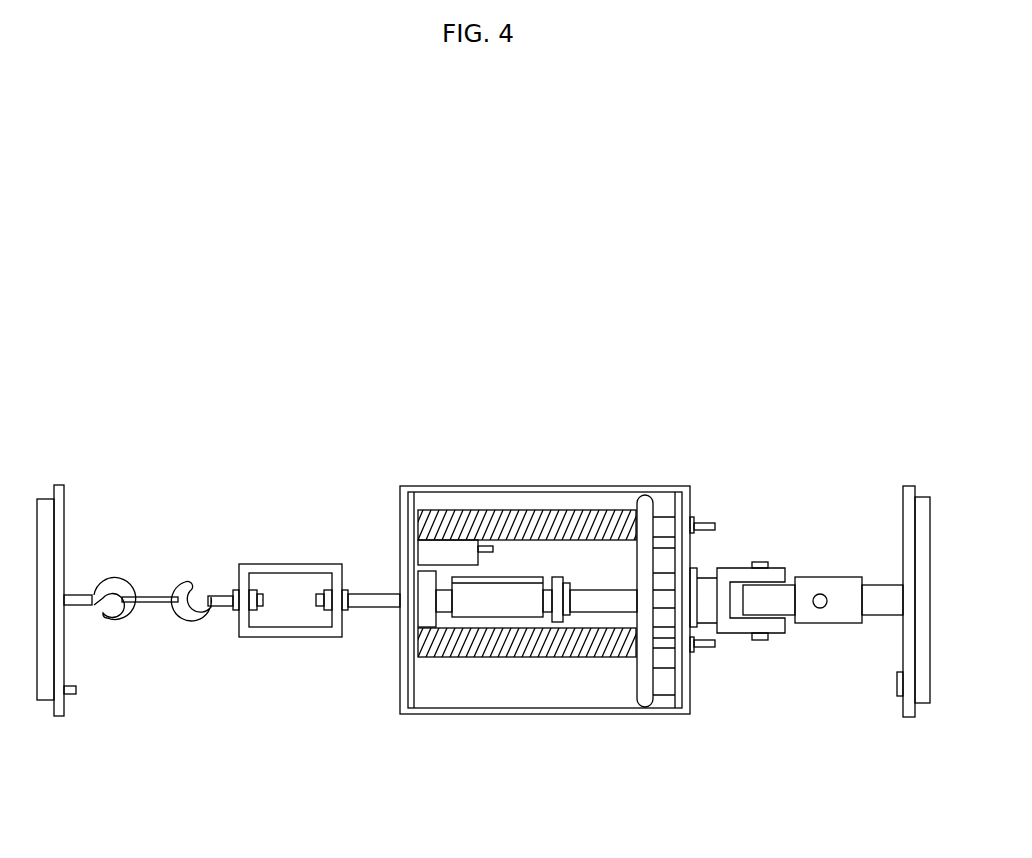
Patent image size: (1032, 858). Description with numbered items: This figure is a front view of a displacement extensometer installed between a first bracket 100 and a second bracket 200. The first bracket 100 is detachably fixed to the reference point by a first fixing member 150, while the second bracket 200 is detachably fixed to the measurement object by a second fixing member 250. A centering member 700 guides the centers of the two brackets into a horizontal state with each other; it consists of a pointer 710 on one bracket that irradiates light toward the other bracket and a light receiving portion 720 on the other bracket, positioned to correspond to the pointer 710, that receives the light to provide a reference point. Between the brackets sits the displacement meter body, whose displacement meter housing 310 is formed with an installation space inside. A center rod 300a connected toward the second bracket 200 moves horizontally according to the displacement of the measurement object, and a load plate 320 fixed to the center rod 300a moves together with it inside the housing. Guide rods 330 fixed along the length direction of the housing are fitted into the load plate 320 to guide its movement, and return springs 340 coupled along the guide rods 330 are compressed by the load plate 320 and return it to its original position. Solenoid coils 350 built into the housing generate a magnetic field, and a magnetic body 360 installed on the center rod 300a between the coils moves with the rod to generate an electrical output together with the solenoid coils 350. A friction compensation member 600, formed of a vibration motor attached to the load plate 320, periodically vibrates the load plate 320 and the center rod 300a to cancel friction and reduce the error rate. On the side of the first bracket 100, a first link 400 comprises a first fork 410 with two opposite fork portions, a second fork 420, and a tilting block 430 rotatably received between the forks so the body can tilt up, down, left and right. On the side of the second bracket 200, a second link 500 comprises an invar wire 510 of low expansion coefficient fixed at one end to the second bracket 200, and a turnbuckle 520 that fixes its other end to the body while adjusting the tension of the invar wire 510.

The first bracket 100 is at (907, 523).
The first fixing member 150 is at (933, 498).
The second bracket 200 is at (63, 492).
The second fixing member 250 is at (38, 693).
The center rod 300a is at (375, 598).
The displacement meter housing 310 is at (533, 486).
The load plate 320 is at (640, 682).
The guide rods 330 is at (665, 520).
The return springs 340 is at (552, 648).
The solenoid coils 350 is at (458, 553).
The magnetic body 360 is at (483, 605).
The first link 400 is at (832, 333).
The first fork 410 is at (842, 583).
The second fork 420 is at (732, 565).
The tilting block 430 is at (778, 602).
The second link 500 is at (275, 440).
The invar wire 510 is at (153, 597).
The turnbuckle 520 is at (272, 572).
The friction compensation member 600 is at (665, 690).
The centering member 700 is at (497, 754).
The pointer 710 is at (76, 692).
The light receiving portion 720 is at (897, 697).